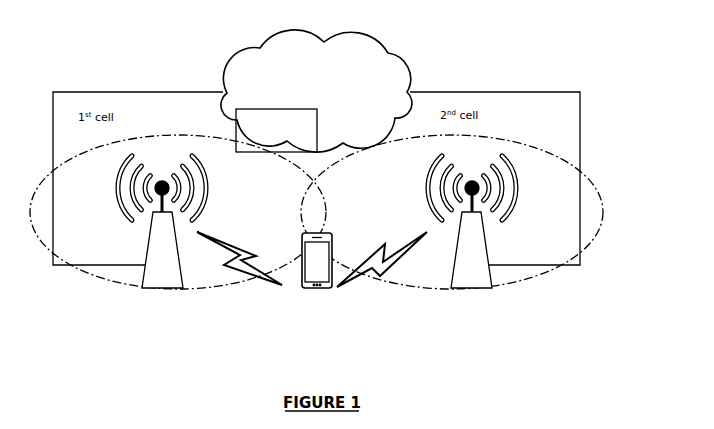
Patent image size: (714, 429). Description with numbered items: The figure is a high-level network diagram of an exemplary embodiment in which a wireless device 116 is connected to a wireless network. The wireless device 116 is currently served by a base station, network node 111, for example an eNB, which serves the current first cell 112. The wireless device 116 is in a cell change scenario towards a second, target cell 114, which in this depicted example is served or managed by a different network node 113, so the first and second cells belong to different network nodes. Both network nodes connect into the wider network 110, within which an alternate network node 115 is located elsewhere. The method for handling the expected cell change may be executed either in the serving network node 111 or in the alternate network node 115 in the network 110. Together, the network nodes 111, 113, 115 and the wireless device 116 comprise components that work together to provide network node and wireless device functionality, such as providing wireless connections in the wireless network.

The network 110 is at (316, 91).
The network node 111 is at (175, 251).
The first cell 112 is at (180, 188).
The network node 113 is at (471, 250).
The second cell 114 is at (489, 188).
The alternate network node 115 is at (290, 130).
The wireless device 116 is at (315, 280).